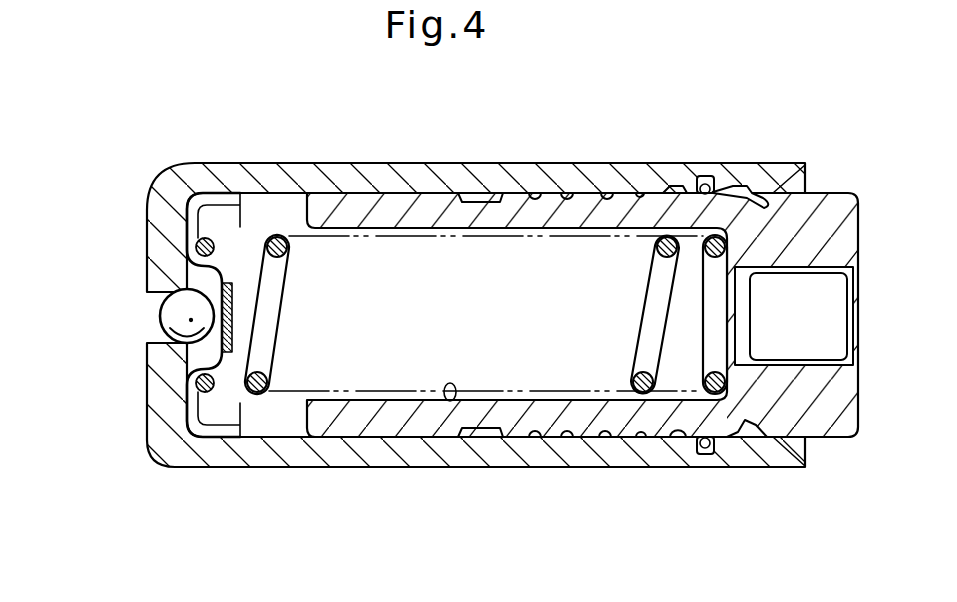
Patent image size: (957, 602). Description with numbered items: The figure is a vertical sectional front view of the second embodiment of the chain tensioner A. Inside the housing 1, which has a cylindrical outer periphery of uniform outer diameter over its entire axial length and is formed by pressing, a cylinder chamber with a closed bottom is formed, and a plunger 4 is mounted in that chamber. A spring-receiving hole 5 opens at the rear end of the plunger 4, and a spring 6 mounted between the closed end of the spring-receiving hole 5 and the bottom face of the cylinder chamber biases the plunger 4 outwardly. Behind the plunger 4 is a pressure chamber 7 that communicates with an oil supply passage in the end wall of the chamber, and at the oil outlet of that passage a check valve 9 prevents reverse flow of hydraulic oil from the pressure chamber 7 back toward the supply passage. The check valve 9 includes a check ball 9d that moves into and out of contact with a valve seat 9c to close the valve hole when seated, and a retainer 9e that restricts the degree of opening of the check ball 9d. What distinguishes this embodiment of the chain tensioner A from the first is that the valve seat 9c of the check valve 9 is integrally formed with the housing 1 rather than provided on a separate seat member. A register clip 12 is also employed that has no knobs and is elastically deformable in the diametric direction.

The housing 1 is at (462, 168).
The chain tensioner A is at (606, 158).
The plunger 4 is at (383, 423).
The spring-receiving hole 5 is at (448, 400).
The spring 6 is at (640, 392).
The pressure chamber 7 is at (281, 417).
The check valve 9 is at (158, 334).
The valve seat 9c is at (163, 305).
The check ball 9d is at (160, 317).
The retainer 9e is at (233, 290).
The register clip 12 is at (705, 450).